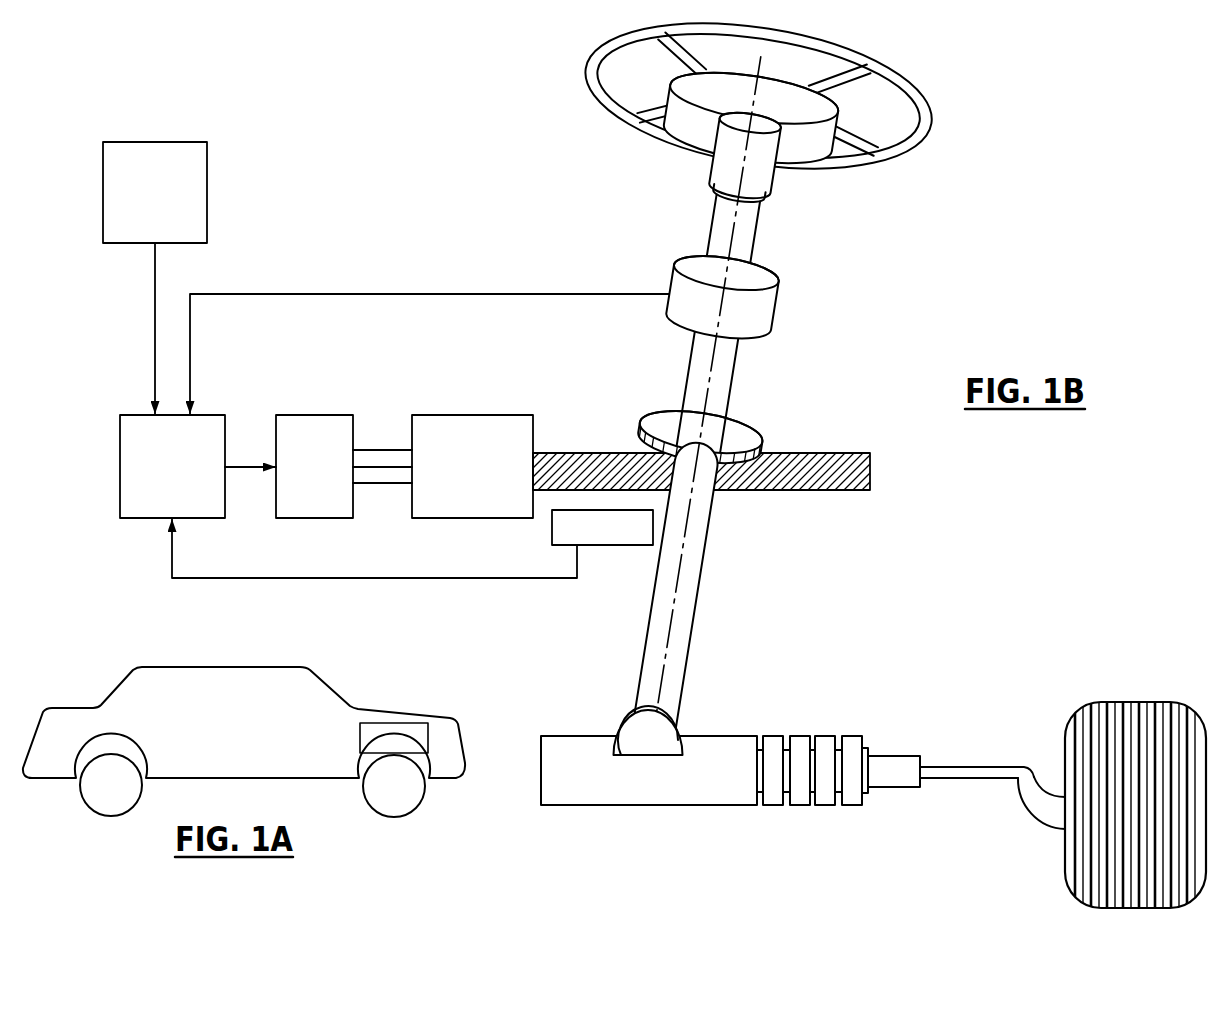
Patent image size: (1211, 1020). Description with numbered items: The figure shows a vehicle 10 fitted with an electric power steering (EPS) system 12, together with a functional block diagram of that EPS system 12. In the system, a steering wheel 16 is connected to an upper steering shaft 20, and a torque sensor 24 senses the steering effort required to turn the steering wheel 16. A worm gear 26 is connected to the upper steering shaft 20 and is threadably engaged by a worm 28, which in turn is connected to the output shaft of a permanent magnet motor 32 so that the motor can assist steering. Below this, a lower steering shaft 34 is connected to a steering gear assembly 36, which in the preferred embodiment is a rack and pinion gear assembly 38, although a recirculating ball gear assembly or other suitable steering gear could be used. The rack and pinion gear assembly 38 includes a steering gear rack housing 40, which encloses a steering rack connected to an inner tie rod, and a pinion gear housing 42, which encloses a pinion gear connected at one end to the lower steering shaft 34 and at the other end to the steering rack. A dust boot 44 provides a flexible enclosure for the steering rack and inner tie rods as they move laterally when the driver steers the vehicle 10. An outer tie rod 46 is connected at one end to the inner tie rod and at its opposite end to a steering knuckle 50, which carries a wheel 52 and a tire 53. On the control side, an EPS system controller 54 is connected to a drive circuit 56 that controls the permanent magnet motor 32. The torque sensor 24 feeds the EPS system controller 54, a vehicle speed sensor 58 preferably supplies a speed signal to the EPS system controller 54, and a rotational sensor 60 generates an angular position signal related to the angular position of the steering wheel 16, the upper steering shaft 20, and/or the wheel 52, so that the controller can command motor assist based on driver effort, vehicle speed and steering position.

In FIG. 1A, the vehicle 10 is at (244, 730).
In FIG. 1A, the electric power steering (EPS) system 12 is at (358, 740).
In FIG. 1B, the electric power steering (EPS) system 12 is at (864, 310).
In FIG. 1B, the steering wheel 16 is at (930, 123).
In FIG. 1B, the upper steering shaft 20 is at (757, 242).
In FIG. 1B, the torque sensor 24 is at (778, 308).
In FIG. 1B, the worm gear 26 is at (754, 437).
In FIG. 1B, the worm 28 is at (843, 491).
In FIG. 1B, the permanent magnet motor 32 is at (477, 414).
In FIG. 1B, the lower steering shaft 34 is at (713, 517).
In FIG. 1B, the steering gear assembly 36 is at (820, 660).
In FIG. 1B, the rack and pinion gear assembly 38 is at (766, 829).
In FIG. 1B, the steering gear rack housing 40 is at (715, 807).
In FIG. 1B, the pinion gear housing 42 is at (681, 725).
In FIG. 1B, the dust boot 44 is at (798, 736).
In FIG. 1B, the outer tie rod 46 is at (972, 765).
In FIG. 1B, the steering knuckle 50 is at (1040, 820).
In FIG. 1B, the wheel 52 is at (1050, 732).
In FIG. 1B, the tire 53 is at (1118, 700).
In FIG. 1B, the EPS system controller 54 is at (225, 420).
In FIG. 1B, the drive circuit 56 is at (318, 415).
In FIG. 1B, the vehicle speed sensor 58 is at (208, 190).
In FIG. 1B, the rotational sensor 60 is at (551, 535).